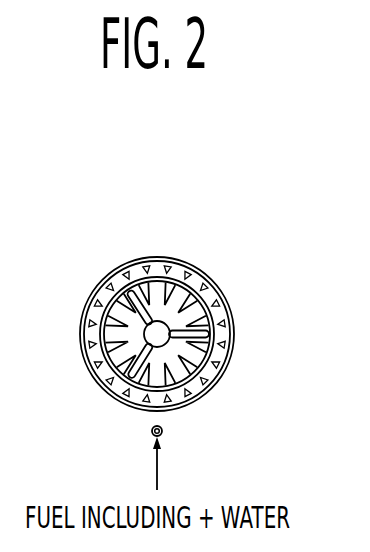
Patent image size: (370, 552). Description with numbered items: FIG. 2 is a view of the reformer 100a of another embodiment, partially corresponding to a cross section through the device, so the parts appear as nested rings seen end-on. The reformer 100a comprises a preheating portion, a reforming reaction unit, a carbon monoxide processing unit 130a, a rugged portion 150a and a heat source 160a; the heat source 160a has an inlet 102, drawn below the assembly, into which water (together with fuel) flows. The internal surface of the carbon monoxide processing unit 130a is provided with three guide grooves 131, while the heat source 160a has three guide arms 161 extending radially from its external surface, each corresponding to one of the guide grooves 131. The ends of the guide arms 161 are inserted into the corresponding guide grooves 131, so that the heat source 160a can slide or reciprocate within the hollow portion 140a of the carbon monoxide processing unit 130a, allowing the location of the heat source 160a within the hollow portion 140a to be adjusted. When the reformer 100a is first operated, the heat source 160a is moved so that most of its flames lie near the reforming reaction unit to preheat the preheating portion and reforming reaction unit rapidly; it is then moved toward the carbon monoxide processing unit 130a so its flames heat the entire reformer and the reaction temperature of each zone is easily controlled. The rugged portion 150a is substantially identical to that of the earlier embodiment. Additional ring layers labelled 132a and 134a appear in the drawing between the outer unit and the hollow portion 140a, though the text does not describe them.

The reformer 100a is at (77, 176).
The inlet 102 is at (163, 430).
The carbon monoxide processing unit 130a is at (176, 246).
The guide groove 131 is at (113, 267).
The outer pipe 132a is at (201, 269).
The inner pipe 134a is at (222, 290).
The hollow portion 140a is at (100, 326).
The rugged portion 150a is at (229, 360).
The heat source 160a is at (86, 359).
The guide arm 161 is at (101, 388).